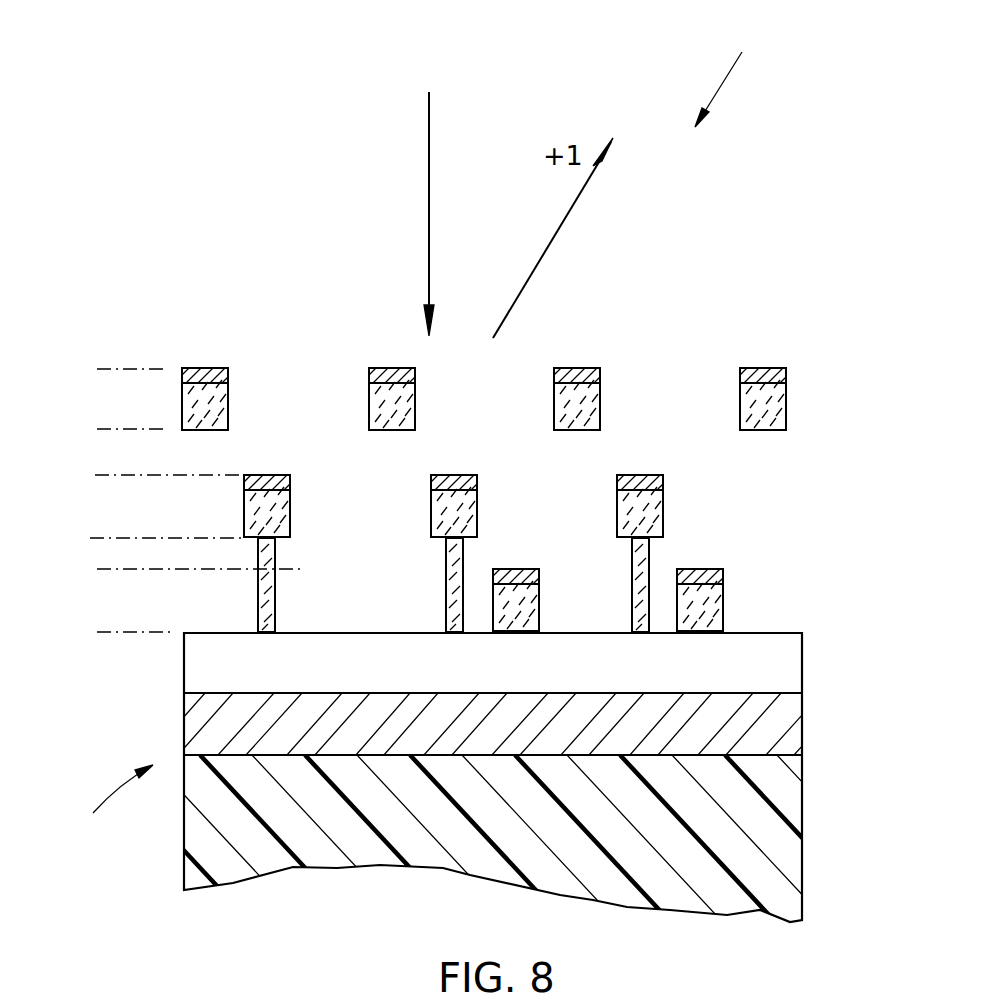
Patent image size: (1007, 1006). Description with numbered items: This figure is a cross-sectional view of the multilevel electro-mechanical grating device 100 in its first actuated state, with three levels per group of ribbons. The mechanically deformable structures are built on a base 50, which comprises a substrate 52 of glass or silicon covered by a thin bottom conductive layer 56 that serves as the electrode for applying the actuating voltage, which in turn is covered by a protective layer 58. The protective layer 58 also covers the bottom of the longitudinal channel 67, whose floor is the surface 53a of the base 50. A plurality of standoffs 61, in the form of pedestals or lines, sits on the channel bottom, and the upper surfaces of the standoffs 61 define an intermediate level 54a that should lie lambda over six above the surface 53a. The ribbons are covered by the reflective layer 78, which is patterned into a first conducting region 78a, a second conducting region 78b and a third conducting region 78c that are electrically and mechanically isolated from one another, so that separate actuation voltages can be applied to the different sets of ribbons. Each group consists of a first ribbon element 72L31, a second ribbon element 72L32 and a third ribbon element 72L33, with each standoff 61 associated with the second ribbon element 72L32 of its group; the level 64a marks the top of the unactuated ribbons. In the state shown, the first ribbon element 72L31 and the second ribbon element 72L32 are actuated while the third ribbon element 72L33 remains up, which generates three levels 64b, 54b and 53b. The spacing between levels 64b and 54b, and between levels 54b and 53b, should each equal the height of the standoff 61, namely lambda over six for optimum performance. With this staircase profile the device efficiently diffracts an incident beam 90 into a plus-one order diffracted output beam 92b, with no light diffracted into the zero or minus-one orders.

The multilevel electro-mechanical grating device 100 is at (736, 73).
The incident beam 90 is at (429, 210).
The +1 order diffracted output beam 92b is at (577, 200).
The reflective layer 78 is at (386, 372).
The first conducting region 78a is at (637, 477).
The second conducting region 78b is at (577, 375).
The third conducting region 78c is at (698, 572).
The standoff 61 is at (630, 567).
The third ribbon element 72L33 is at (597, 398).
The second ribbon element 72L32 is at (657, 500).
The first ribbon element 72L31 is at (725, 600).
The longitudinal channel 67 is at (728, 507).
The upper level 64b is at (100, 370).
The upper level 64a is at (98, 430).
The intermediate level 54b is at (108, 476).
The intermediate level 54a is at (110, 538).
The lower level 53b is at (112, 569).
The surface of the base 53a is at (115, 632).
The base 50 is at (437, 777).
The protective layer 58 is at (795, 667).
The bottom conductive layer 56 is at (795, 725).
The substrate 52 is at (795, 807).